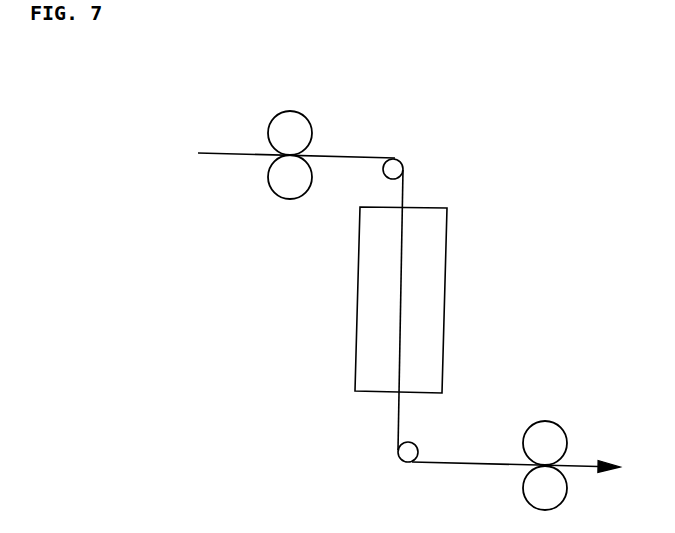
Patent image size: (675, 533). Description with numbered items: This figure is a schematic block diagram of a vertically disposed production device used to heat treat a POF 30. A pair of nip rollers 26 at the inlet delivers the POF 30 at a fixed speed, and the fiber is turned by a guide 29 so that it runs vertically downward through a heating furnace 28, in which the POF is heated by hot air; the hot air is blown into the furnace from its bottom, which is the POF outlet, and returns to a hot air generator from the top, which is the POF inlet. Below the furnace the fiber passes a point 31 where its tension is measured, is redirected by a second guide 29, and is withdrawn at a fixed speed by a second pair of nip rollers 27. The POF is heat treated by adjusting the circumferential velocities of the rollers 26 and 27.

The nip roller 26 is at (308, 122).
The nip roller 27 is at (543, 430).
The heating furnace 28 is at (435, 281).
The guide 29 is at (405, 159).
The POF 30 is at (222, 140).
The point where tension is measured 31 is at (385, 417).